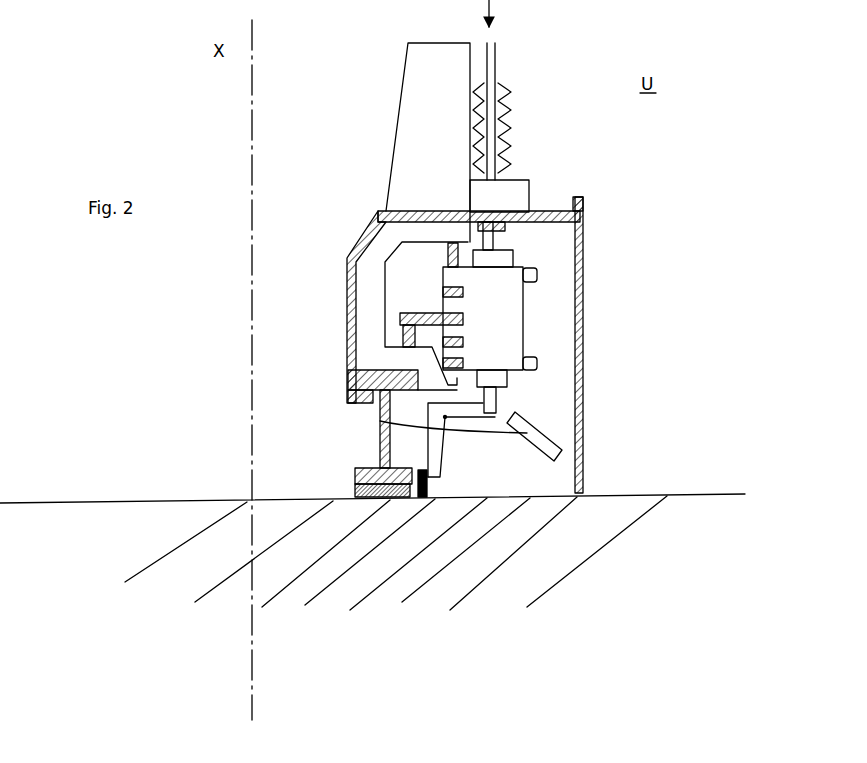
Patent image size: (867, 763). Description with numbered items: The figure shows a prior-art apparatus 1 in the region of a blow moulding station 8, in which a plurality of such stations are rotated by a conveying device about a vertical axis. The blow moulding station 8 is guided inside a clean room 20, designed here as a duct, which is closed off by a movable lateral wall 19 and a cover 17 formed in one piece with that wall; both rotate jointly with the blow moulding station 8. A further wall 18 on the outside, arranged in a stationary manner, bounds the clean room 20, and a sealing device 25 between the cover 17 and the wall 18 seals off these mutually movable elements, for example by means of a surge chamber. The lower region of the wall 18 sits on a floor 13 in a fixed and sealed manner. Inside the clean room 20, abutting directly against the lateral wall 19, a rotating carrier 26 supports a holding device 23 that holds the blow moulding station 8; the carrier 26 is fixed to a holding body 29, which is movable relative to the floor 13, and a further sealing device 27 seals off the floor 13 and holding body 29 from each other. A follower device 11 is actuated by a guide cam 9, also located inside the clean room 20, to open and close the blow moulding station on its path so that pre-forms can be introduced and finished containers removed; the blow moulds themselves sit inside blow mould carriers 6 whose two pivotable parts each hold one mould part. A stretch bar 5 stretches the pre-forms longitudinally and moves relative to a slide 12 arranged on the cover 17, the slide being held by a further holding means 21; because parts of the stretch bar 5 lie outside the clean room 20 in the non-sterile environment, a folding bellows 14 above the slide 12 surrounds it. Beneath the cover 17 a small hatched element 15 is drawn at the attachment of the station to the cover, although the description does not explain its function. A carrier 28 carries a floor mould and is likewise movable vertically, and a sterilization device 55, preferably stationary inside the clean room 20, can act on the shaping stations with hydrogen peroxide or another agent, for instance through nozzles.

The apparatus 1 is at (353, 112).
The stretch bar 5 is at (488, 127).
The blow mould carrier 6 is at (513, 340).
The blow moulding station 8 is at (510, 300).
The guide cam 9 is at (430, 477).
The follower device 11 is at (447, 430).
The slide 12 is at (513, 182).
The floor 13 is at (625, 543).
The folding bellows 14 is at (507, 153).
The fastener 15 is at (505, 224).
The cover 17 is at (433, 213).
The wall 18 is at (583, 273).
The lateral wall 19 is at (348, 305).
The clean room 20 is at (547, 423).
The holding means 21 is at (453, 90).
The holding device 23 is at (423, 317).
The sealing device 25 is at (583, 198).
The carrier 26 is at (372, 360).
The further sealing device 27 is at (355, 488).
The carrier for floor mould 28 is at (497, 403).
The holding body 29 is at (380, 445).
The sterilization device 55 is at (380, 421).